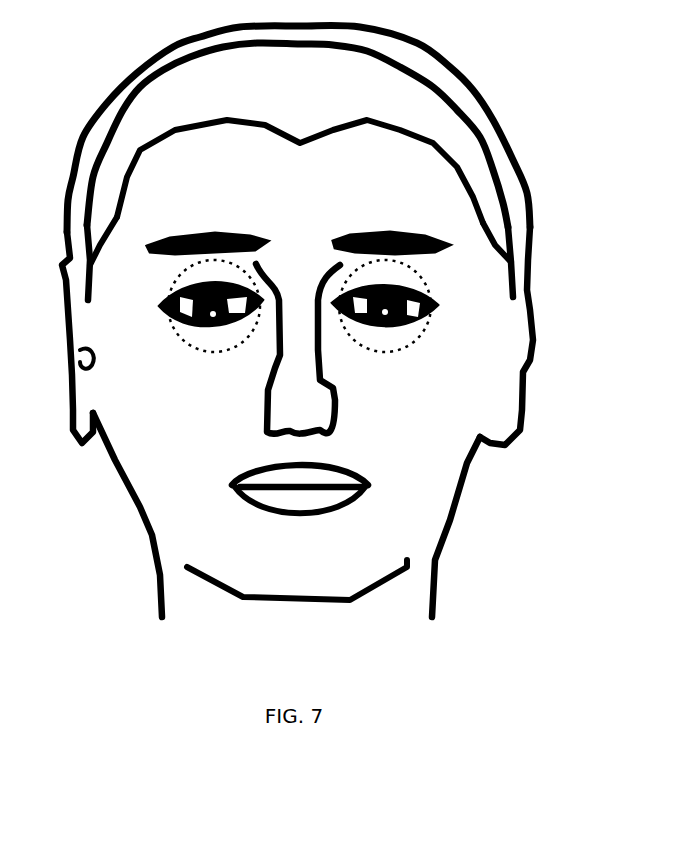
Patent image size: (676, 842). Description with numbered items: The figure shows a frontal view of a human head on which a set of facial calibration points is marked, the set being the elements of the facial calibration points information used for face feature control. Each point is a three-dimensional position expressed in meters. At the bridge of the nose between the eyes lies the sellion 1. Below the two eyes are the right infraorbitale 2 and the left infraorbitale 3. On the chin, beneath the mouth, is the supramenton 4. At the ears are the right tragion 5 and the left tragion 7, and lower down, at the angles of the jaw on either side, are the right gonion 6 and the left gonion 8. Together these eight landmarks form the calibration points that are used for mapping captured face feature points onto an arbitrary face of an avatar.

The sellion 1 is at (298, 324).
The right infraorbitale 2 is at (211, 344).
The left infraorbitale 3 is at (385, 341).
The supramenton 4 is at (336, 548).
The right tragion 5 is at (61, 334).
The right gonion 6 is at (131, 515).
The left tragion 7 is at (533, 336).
The left gonion 8 is at (462, 527).